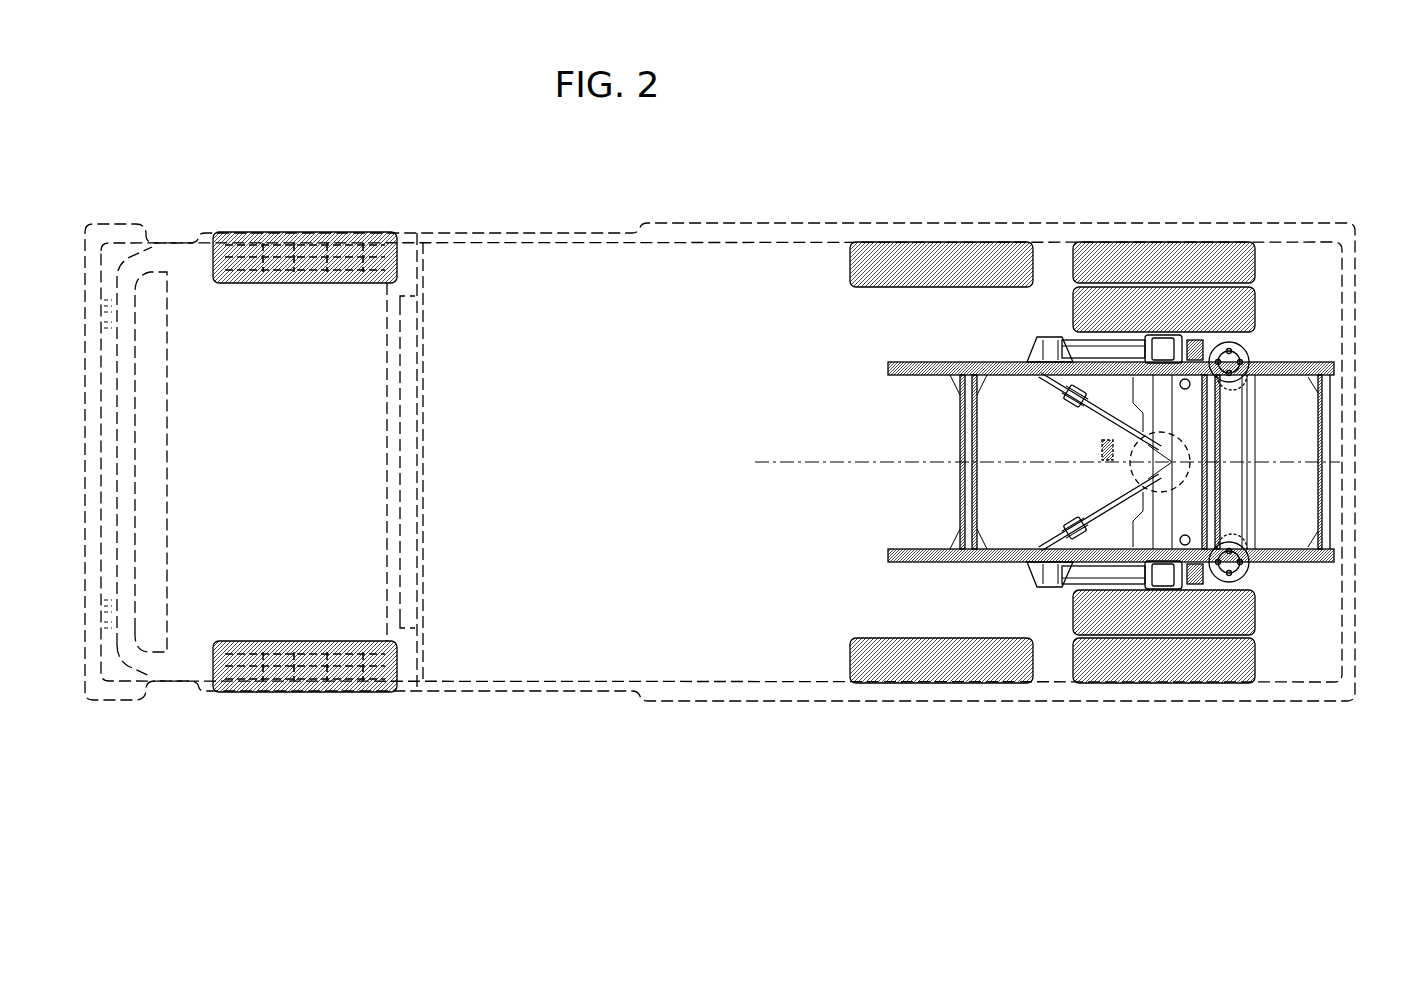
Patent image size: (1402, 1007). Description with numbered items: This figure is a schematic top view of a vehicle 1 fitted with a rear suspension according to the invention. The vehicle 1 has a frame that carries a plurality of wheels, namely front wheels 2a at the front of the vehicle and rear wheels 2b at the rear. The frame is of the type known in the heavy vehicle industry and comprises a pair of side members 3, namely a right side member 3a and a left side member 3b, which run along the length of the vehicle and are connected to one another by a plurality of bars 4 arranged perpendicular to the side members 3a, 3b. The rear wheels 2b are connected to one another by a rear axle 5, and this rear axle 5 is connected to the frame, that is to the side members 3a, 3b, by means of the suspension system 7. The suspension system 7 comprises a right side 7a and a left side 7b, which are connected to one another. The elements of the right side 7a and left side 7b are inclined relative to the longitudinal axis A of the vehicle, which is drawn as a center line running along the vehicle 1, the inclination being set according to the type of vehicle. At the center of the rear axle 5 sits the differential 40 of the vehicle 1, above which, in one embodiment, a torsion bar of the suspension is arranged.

The vehicle 1 is at (918, 160).
The front wheels 2a is at (258, 232).
The rear wheels 2b is at (1150, 252).
The side members 3 is at (1144, 466).
The right side member 3a is at (1297, 562).
The left side member 3b is at (1277, 363).
The bars 4 is at (962, 437).
The rear axle 5 is at (1200, 412).
The suspension system 7 is at (1082, 438).
The right side of the suspension system 7a is at (996, 606).
The left side of the suspension system 7b is at (1040, 320).
The differential 40 is at (1105, 456).
The longitudinal axis of the vehicle A is at (812, 461).